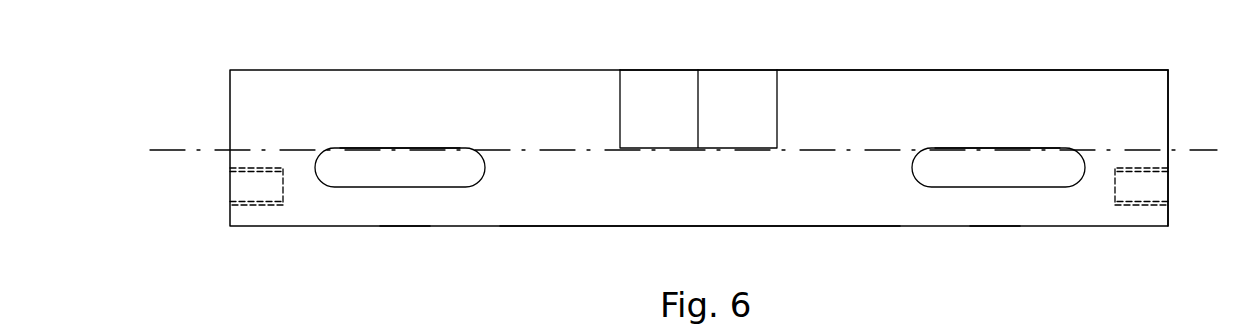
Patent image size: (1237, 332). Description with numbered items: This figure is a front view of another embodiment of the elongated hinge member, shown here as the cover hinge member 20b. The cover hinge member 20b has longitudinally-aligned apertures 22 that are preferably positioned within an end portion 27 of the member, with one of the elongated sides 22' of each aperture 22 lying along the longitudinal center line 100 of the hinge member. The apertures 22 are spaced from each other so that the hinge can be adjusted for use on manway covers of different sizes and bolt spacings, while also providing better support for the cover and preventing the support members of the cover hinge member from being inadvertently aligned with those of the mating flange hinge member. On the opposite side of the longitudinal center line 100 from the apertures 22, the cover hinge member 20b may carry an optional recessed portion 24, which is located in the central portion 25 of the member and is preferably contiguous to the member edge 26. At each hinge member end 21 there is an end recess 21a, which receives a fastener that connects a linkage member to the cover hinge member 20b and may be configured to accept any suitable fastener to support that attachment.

The longitudinal center line 100 is at (172, 150).
The hinge member end 21 is at (1173, 103).
The end recess 21a is at (1142, 187).
The cover hinge member 20b is at (288, 237).
The longitudinally-aligned apertures 22 is at (700, 181).
The elongated sides of apertures 22' is at (698, 182).
The recessed portion 24 is at (669, 94).
The central portion 25 is at (648, 208).
The member edge 26 is at (894, 45).
The end portion 27 is at (403, 238).